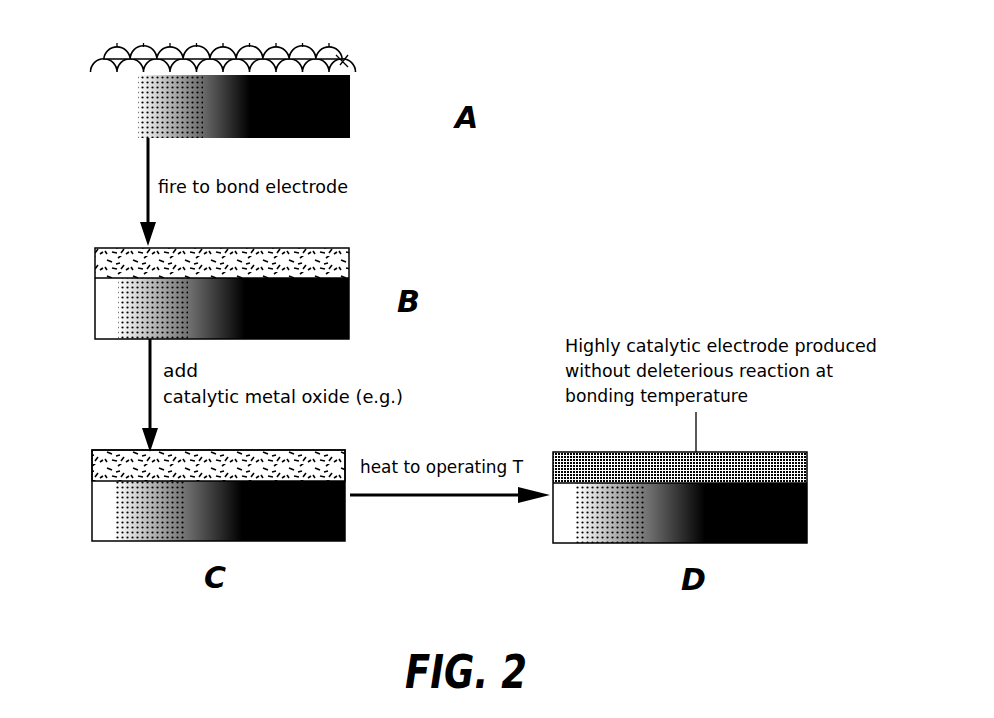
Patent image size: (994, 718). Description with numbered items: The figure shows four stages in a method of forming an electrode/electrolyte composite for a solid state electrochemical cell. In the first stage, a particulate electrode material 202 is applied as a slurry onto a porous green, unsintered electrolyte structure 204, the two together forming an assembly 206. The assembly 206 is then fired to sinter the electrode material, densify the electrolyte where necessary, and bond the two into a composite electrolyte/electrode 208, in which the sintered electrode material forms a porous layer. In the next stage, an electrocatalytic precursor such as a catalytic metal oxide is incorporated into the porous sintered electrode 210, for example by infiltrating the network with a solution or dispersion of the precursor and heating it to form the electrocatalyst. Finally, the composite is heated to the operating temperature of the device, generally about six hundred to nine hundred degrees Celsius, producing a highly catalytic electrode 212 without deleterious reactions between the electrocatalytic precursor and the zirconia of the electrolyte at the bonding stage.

The particulate electrode material 202 is at (341, 61).
The porous green electrolyte structure 204 is at (350, 106).
The assembly 206 is at (240, 89).
The composite electrolyte/electrode 208 is at (72, 288).
The porous sintered electrode 210 is at (95, 463).
The highly catalytic electrode 212 is at (815, 452).